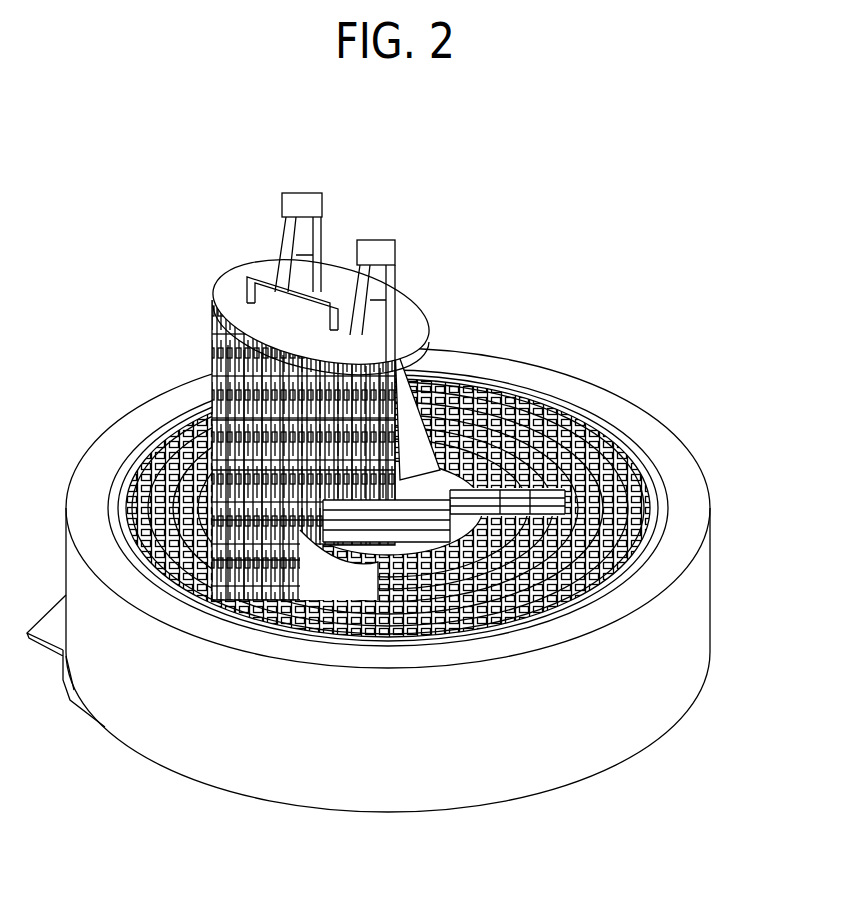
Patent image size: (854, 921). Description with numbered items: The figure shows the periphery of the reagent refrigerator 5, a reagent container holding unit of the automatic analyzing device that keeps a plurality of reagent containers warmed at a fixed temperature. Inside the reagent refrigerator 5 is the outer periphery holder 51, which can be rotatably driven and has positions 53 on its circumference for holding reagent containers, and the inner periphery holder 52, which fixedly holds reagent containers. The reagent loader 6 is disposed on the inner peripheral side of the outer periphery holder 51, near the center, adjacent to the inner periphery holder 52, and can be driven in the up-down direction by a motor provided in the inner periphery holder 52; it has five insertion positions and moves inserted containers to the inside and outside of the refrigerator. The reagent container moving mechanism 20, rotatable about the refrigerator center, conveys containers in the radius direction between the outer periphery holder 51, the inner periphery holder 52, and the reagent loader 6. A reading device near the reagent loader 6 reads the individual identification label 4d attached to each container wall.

The reagent refrigerator 5 is at (613, 290).
The reagent loader 6 is at (222, 278).
The reagent container moving mechanism 20 is at (585, 426).
The individual identification label 4d is at (337, 507).
The outer periphery holder 51 is at (618, 543).
The inner periphery holder 52 is at (522, 577).
The positions 53 is at (380, 625).